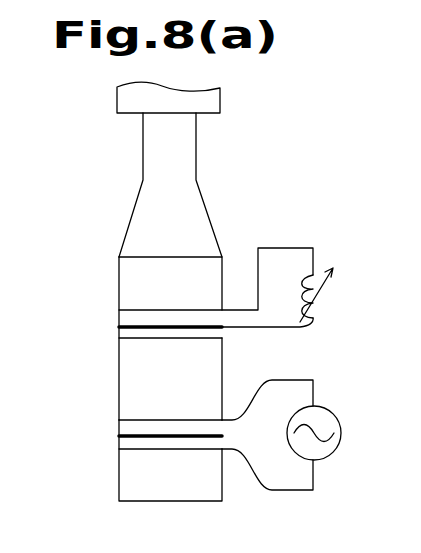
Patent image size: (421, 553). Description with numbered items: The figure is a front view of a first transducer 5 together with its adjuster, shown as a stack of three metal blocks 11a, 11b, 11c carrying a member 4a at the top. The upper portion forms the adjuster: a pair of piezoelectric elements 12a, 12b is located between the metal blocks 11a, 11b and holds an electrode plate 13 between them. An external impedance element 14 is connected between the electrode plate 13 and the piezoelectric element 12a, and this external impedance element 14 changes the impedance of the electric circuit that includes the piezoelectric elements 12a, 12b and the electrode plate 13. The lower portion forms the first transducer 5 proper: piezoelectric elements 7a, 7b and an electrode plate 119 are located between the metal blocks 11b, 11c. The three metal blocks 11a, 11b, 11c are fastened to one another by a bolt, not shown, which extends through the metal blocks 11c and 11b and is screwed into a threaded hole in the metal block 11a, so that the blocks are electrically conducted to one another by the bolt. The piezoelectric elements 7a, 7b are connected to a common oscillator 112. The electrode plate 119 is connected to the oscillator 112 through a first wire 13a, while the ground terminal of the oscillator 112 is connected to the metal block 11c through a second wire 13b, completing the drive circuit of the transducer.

The substrate / workpiece 4a is at (221, 103).
The first transducer 5 is at (101, 246).
The metal block 11a is at (215, 272).
The metal block 11b is at (122, 382).
The metal block 11c is at (122, 490).
The piezoelectric element 12a is at (120, 316).
The piezoelectric element 12b is at (222, 338).
The electrode plate 13 is at (120, 327).
The external impedance element 14 is at (330, 300).
The piezoelectric element 7a is at (122, 422).
The piezoelectric element 7b is at (122, 447).
The electrode plate 119 is at (122, 436).
The first wire 13a is at (257, 397).
The second wire 13b is at (262, 490).
The oscillator 112 is at (322, 460).